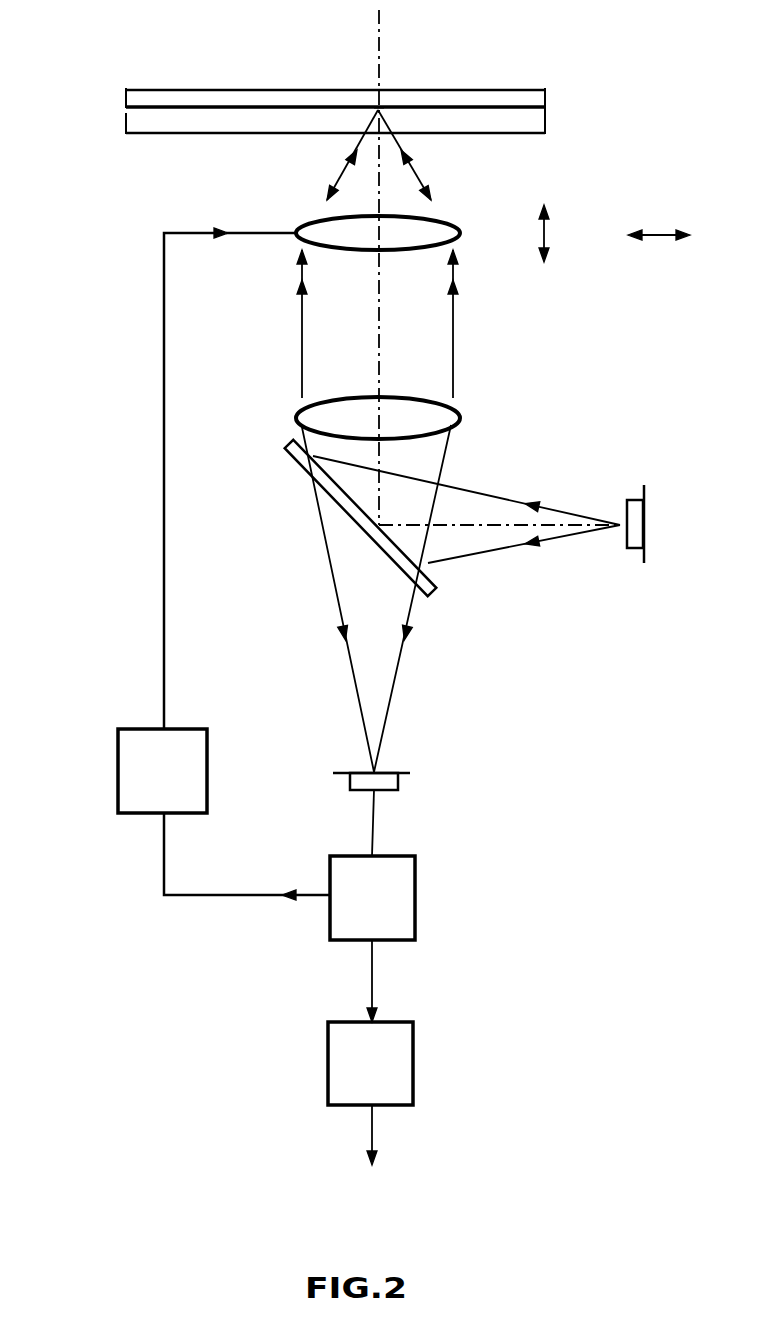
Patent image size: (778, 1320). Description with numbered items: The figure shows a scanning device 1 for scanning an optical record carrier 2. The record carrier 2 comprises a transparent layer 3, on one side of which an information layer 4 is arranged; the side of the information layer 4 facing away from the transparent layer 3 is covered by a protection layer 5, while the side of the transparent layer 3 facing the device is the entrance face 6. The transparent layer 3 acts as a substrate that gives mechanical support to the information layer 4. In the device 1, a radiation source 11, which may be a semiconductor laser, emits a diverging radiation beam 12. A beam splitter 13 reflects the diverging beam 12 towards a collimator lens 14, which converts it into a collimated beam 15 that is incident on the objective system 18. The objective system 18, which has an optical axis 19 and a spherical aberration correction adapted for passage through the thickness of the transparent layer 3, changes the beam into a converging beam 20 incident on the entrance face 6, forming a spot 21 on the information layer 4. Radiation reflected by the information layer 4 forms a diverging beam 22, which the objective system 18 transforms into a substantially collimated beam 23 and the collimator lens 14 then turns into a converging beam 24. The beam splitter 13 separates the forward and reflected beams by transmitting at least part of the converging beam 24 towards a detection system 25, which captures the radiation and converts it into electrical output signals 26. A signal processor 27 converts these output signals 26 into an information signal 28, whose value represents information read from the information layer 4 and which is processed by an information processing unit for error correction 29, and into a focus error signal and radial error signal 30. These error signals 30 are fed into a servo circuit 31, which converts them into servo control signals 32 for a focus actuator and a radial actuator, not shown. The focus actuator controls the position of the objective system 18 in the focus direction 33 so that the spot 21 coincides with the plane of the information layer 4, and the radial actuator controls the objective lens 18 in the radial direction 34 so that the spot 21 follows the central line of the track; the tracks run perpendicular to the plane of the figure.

The scanning device 1 is at (57, 473).
The optical record carrier 2 is at (302, 101).
The transparent layer 3 is at (147, 122).
The information layer 4 is at (173, 105).
The protection layer 5 is at (147, 97).
The entrance face 6 is at (168, 135).
The radiation source 11 is at (645, 537).
The radiation beam 12 is at (540, 506).
The beam splitter 13 is at (290, 455).
The collimator lens 14 is at (317, 418).
The collimated beam 15 is at (302, 353).
The objective system 18 is at (300, 228).
The optical axis 19 is at (383, 32).
The converging beam 20 is at (357, 155).
The spot 21 is at (378, 108).
The diverging beam 22 is at (436, 197).
The collimated beam 23 is at (457, 286).
The converging beam 24 is at (445, 455).
The detection system 25 is at (400, 782).
The electrical output signals 26 is at (375, 825).
The signal processor 27 is at (415, 897).
The information signal 28 is at (373, 970).
The information processing unit for error correction 29 is at (413, 1060).
The focus error signal and radial error signal 30 is at (218, 898).
The servo circuit 31 is at (118, 770).
The servo control signals 32 is at (165, 527).
The focus direction 33 is at (546, 235).
The radial direction 34 is at (660, 238).